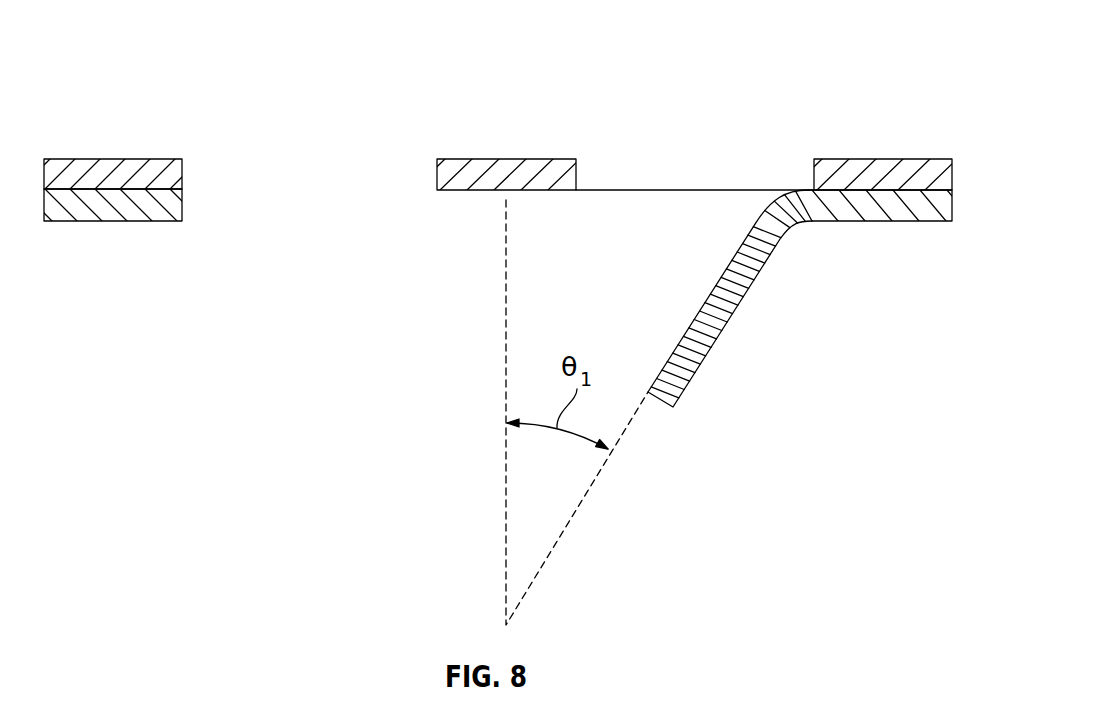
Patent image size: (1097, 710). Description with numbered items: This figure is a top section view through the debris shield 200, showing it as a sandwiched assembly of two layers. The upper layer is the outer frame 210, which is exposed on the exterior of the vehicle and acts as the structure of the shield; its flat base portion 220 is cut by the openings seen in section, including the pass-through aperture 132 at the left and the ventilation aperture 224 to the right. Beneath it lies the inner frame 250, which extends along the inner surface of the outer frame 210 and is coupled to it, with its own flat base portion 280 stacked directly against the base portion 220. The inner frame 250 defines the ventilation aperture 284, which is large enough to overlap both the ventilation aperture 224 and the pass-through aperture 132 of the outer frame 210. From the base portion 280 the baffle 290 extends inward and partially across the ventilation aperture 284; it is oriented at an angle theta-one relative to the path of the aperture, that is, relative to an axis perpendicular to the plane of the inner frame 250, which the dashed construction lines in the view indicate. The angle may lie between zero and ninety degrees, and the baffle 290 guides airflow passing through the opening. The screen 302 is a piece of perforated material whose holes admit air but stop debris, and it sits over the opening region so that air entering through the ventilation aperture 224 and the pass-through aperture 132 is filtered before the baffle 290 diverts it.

The pass-through aperture 132 is at (312, 136).
The debris shield 200 is at (887, 36).
The outer frame 210 is at (105, 170).
The inner frame 250 is at (111, 210).
The ventilation aperture 284 is at (240, 230).
The screen 302 is at (647, 190).
The ventilation aperture 224 is at (758, 154).
The base portion 220 is at (875, 175).
The base portion 280 is at (901, 210).
The baffle 290 is at (727, 323).